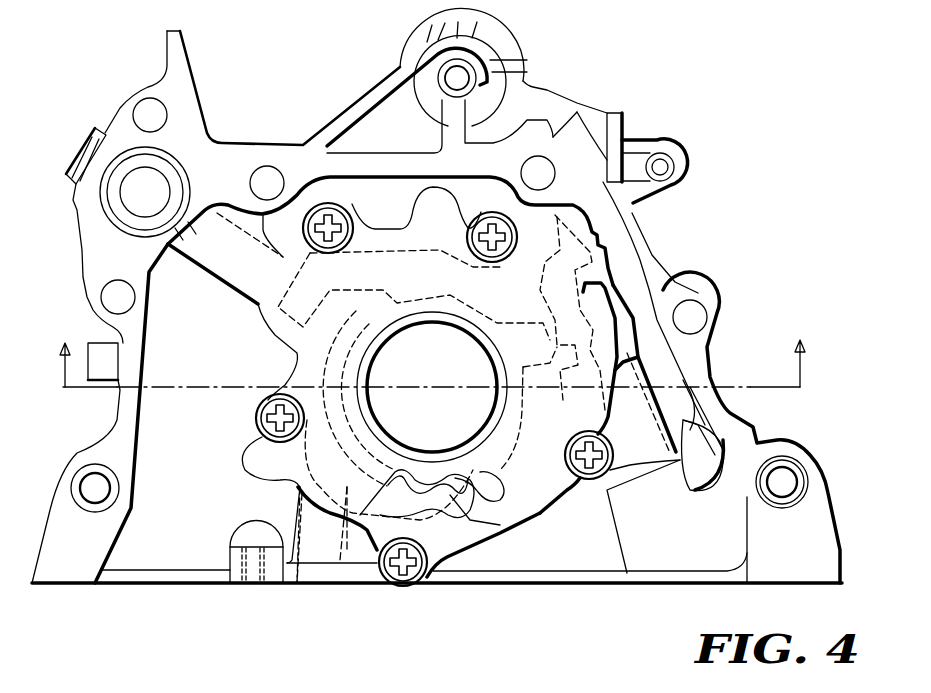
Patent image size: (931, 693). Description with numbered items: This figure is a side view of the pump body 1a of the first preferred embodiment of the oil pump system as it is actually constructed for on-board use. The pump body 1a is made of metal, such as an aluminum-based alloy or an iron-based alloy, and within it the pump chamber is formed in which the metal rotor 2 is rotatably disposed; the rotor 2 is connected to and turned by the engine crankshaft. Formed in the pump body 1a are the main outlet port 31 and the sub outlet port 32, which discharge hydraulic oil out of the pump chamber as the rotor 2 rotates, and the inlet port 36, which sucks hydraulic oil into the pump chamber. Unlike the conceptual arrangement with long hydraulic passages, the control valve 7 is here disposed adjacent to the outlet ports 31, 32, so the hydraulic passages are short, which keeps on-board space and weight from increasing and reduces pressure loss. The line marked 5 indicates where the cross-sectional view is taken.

The main outlet port 31 is at (393, 260).
The sub outlet port 32 is at (538, 512).
The inlet port 36 is at (347, 487).
The control valve 7 is at (664, 304).
The rotor 2 is at (438, 497).
The pump body 1a is at (457, 517).
The section line 5- 5 is at (431, 339).